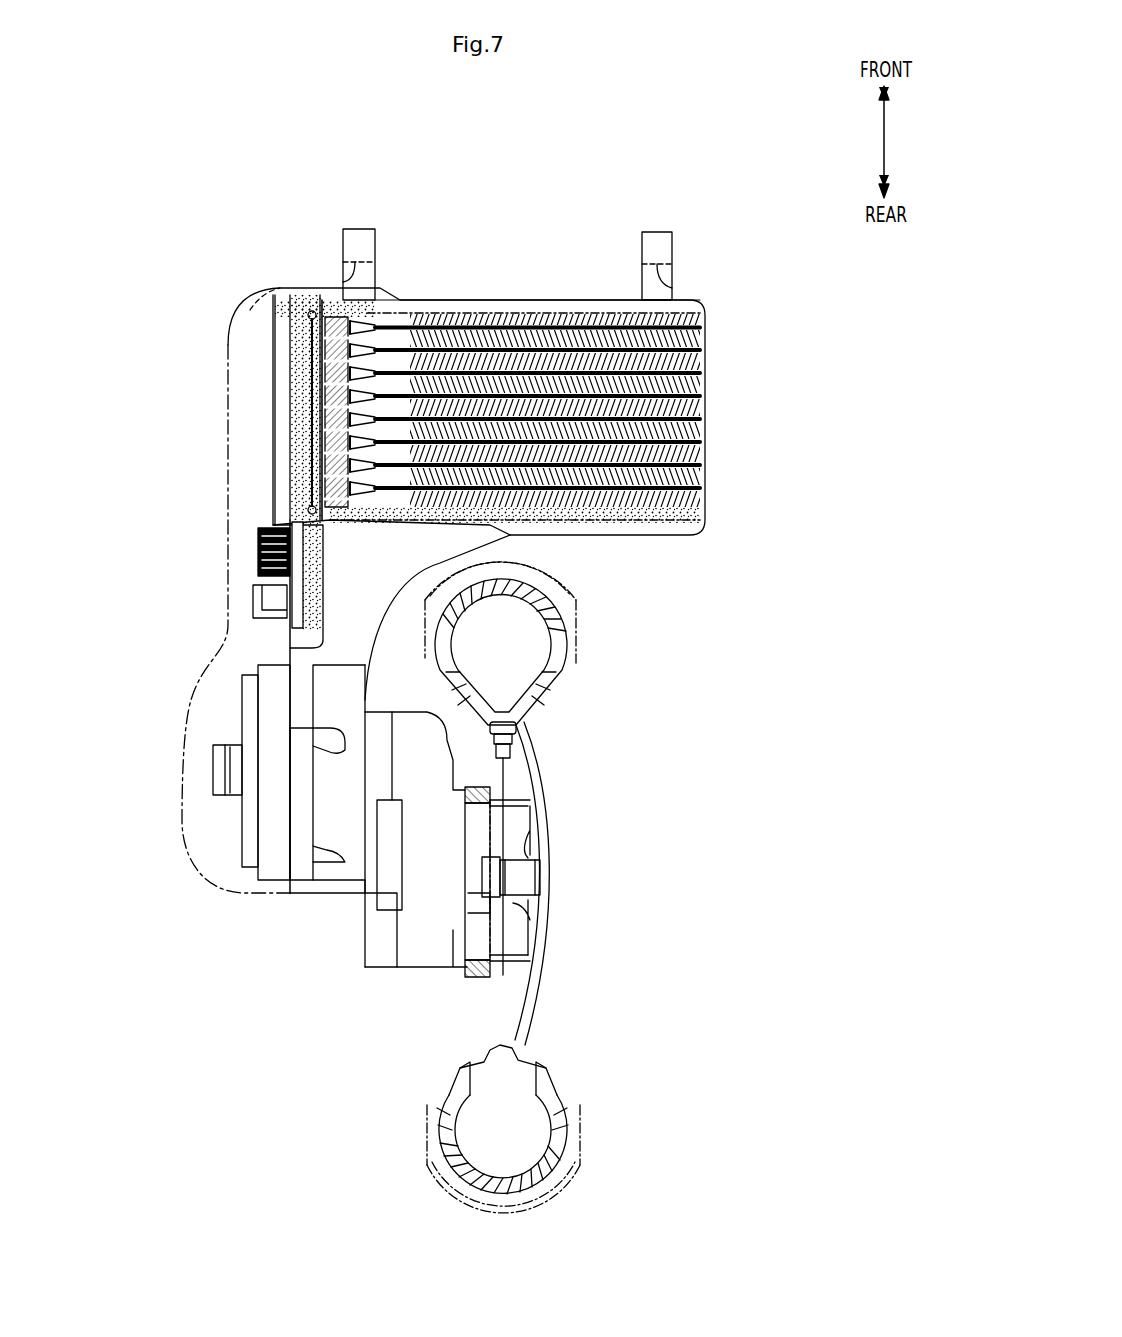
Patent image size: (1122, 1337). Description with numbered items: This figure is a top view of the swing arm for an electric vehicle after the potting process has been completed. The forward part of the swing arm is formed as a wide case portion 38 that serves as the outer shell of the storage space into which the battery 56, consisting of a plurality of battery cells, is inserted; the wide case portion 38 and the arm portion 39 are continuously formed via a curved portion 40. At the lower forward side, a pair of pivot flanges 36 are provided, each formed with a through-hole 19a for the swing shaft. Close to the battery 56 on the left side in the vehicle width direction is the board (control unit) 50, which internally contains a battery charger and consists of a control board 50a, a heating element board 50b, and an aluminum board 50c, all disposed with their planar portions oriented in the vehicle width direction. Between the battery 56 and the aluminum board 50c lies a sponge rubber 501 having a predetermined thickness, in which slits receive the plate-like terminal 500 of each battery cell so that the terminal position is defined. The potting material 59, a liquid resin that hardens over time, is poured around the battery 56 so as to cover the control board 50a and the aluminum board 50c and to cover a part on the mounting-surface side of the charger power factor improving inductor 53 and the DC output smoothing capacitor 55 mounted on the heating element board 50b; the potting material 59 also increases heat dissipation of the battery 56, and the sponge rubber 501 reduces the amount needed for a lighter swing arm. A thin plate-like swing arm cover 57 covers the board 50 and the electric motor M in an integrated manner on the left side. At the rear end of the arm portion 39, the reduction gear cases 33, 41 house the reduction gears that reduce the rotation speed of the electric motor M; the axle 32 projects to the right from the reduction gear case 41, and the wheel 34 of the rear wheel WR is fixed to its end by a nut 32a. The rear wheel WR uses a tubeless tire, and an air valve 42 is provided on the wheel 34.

The pivot flange 36 is at (343, 240).
The through-hole 19a is at (343, 278).
The wide case portion 38 is at (512, 298).
The potting material 59 is at (325, 335).
The sponge rubber 501 is at (365, 353).
The plate-like terminal 500 is at (318, 367).
The control board 50a is at (277, 403).
The aluminum board 50c is at (320, 420).
The board (control unit) 50 is at (262, 468).
The battery 56 is at (697, 439).
The charger power factor improving inductor 53 is at (258, 540).
The DC output smoothing capacitor 55 is at (258, 603).
The heating element board 50b is at (290, 642).
The arm portion 39 is at (325, 674).
The curved portion 40 is at (395, 620).
The air valve 42 is at (512, 730).
The swing arm cover 57 is at (180, 810).
The wheel 34 is at (492, 806).
The electric motor M is at (223, 846).
The nut 32a is at (532, 880).
The reduction gear case 33 is at (367, 927).
The axle 32 is at (540, 922).
The reduction gear case 41 is at (420, 952).
The rear wheel WR is at (550, 1173).